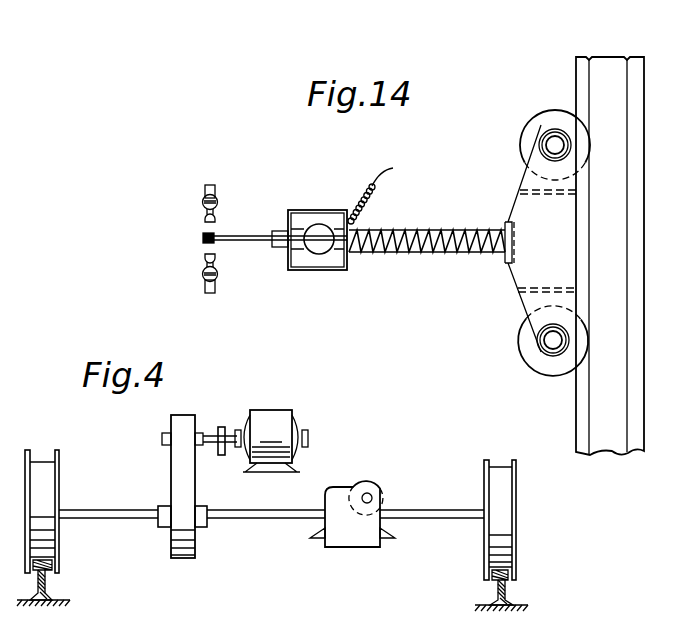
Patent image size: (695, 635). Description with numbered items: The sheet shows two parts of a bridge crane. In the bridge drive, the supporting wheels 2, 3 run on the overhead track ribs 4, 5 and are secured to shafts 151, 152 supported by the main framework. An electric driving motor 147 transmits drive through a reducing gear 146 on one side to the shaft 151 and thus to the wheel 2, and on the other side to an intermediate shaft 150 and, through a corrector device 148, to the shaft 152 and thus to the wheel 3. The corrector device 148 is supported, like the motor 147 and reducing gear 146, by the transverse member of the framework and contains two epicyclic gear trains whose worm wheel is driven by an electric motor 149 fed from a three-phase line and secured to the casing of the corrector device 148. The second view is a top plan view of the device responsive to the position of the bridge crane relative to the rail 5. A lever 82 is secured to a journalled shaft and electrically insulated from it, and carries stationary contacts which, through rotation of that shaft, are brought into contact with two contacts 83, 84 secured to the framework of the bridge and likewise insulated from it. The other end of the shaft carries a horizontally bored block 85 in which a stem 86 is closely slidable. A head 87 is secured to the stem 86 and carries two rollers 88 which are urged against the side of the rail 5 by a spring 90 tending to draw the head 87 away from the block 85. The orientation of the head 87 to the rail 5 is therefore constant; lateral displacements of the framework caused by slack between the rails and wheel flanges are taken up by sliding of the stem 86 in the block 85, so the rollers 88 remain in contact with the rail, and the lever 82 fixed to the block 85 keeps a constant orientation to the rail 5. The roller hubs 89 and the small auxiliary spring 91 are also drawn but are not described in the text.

In FIG. 14, the track rib / rail 5 is at (622, 63).
In FIG. 4, the track rib / rail 5 is at (507, 592).
In FIG. 14, the head 87 is at (518, 275).
In FIG. 14, the rollers 88 is at (535, 125).
In FIG. 14, the wheel axle hub 89 is at (550, 145).
In FIG. 14, the spring 90 is at (383, 252).
In FIG. 14, the small spring 91 is at (365, 181).
In FIG. 14, the horizontally bored block 85 is at (311, 271).
In FIG. 14, the stem 86 is at (279, 250).
In FIG. 14, the lever 82 is at (240, 243).
In FIG. 14, the contact 83 is at (204, 219).
In FIG. 14, the contact 84 is at (205, 255).
In FIG. 4, the supporting wheel 2 is at (40, 486).
In FIG. 4, the supporting wheel 3 is at (503, 498).
In FIG. 4, the track rib 4 is at (46, 584).
In FIG. 4, the reducing gear 146 is at (189, 488).
In FIG. 4, the electric driving motor 147 is at (288, 436).
In FIG. 4, the corrector device 148 is at (347, 539).
In FIG. 4, the electric motor 149 is at (370, 488).
In FIG. 4, the intermediate shaft 150 is at (228, 518).
In FIG. 4, the shaft 151 is at (90, 518).
In FIG. 4, the shaft 152 is at (408, 518).